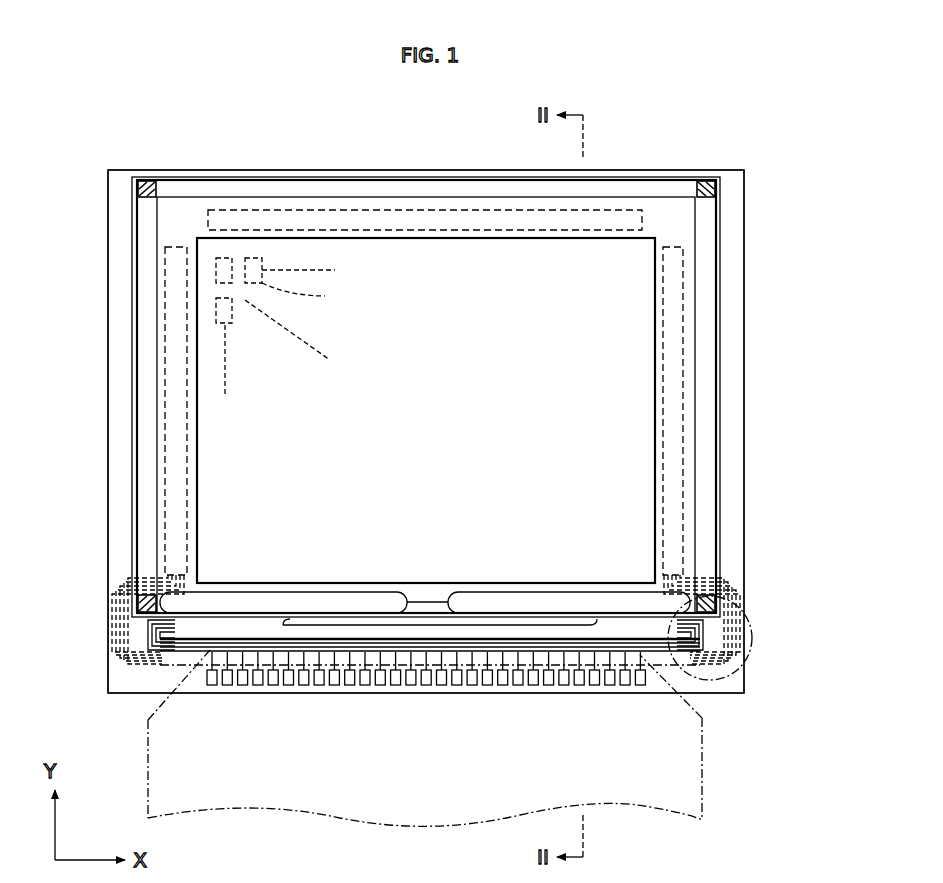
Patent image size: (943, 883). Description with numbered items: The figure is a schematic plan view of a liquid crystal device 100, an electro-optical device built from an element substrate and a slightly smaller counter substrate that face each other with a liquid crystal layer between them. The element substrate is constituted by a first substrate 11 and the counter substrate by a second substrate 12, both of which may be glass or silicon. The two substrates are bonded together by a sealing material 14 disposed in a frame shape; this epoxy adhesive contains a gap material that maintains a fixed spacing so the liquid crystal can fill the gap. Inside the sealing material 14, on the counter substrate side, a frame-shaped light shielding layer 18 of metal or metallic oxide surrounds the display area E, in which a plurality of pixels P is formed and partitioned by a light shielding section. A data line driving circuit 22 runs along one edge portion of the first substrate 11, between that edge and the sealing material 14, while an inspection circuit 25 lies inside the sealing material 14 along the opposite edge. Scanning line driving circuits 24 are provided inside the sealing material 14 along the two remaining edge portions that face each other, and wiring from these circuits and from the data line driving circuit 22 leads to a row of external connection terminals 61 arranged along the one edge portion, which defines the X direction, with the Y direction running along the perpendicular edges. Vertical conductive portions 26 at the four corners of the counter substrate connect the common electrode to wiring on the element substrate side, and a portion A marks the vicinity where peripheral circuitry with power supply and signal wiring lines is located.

The liquid crystal device 100 is at (716, 92).
The first substrate 11 is at (214, 170).
The second substrate 12 is at (308, 177).
The sealing material 14 is at (703, 277).
The light shielding layer 18 is at (663, 200).
The data line driving circuit 22 is at (213, 632).
The scanning line driving circuits 24 is at (178, 436).
The inspection circuit 25 is at (398, 216).
The vertical conductive portions 26 is at (142, 183).
The external connection terminals 61 is at (312, 687).
The pixels P is at (282, 326).
The display area E is at (658, 350).
The portion A is at (746, 602).